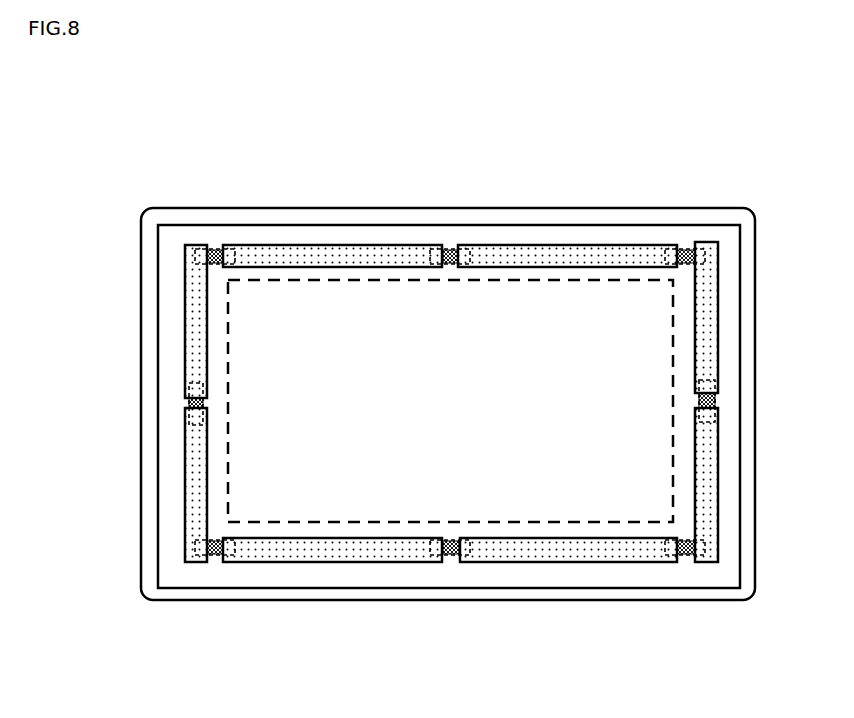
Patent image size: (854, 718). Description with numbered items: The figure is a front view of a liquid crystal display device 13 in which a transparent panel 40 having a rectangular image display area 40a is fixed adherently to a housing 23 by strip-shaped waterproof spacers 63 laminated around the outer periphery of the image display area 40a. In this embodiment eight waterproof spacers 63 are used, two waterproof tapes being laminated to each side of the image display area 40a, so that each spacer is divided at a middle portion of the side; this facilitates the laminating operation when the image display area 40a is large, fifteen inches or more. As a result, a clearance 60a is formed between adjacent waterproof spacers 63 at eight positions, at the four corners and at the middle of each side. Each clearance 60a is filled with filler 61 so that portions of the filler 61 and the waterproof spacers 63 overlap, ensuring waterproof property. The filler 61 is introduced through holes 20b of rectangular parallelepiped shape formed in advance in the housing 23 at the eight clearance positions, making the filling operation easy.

The liquid crystal display device 13 is at (440, 100).
The housing 23 is at (160, 217).
The transparent panel 40 is at (172, 295).
The image display area 40a is at (375, 470).
The waterproof spacer 63 is at (318, 250).
The clearance 60a is at (443, 250).
The filler 61 is at (213, 250).
The hole 20b is at (198, 250).